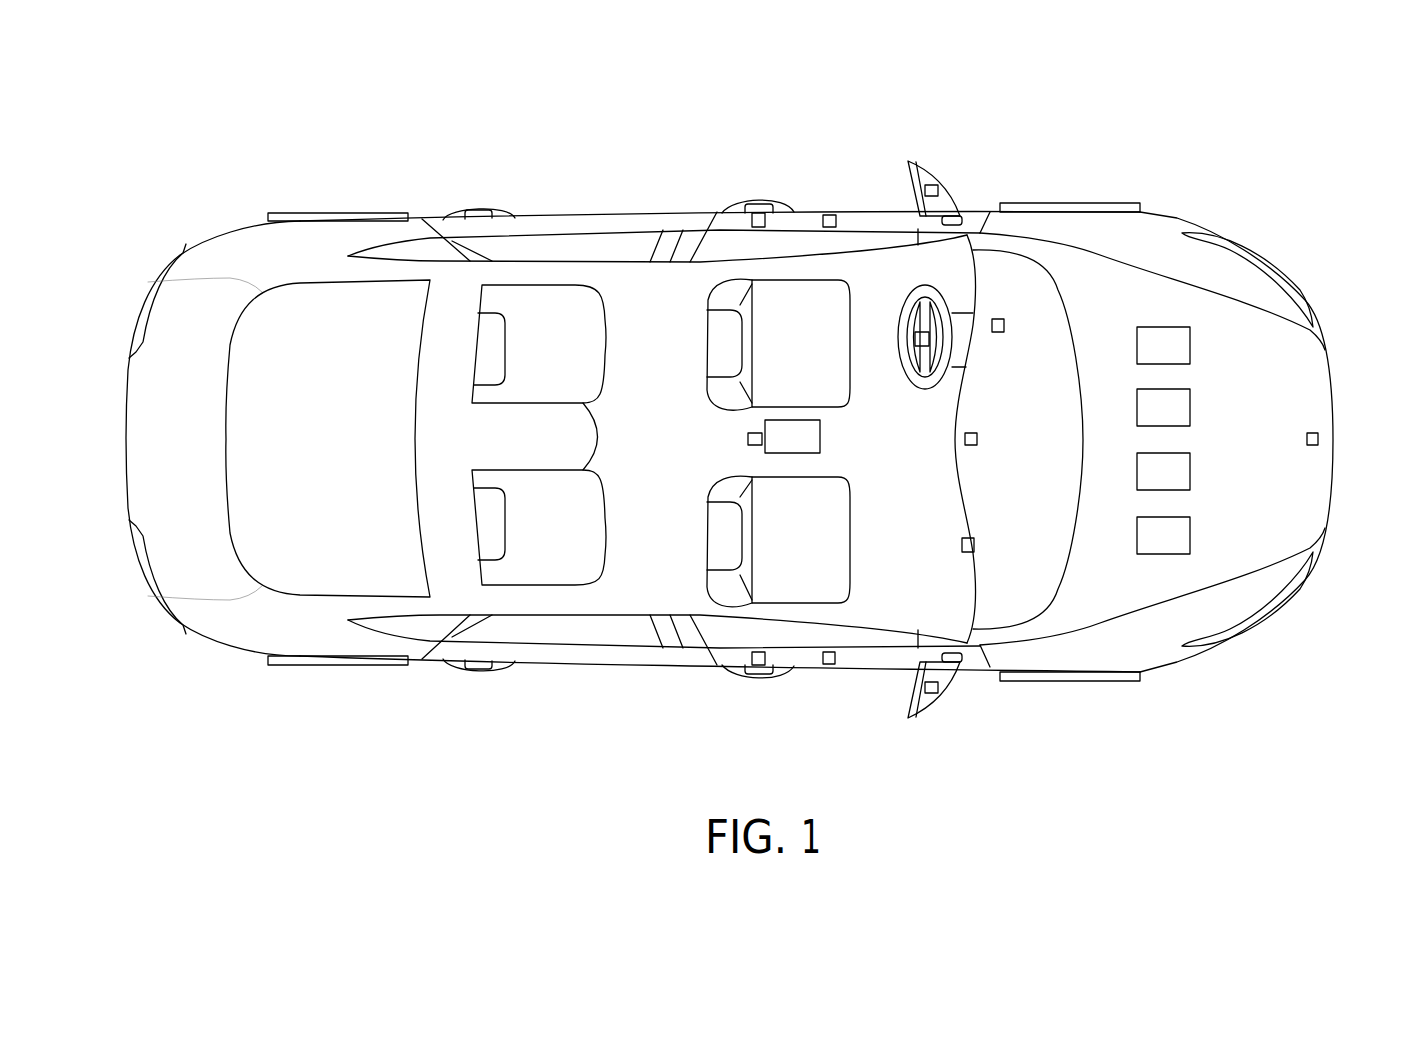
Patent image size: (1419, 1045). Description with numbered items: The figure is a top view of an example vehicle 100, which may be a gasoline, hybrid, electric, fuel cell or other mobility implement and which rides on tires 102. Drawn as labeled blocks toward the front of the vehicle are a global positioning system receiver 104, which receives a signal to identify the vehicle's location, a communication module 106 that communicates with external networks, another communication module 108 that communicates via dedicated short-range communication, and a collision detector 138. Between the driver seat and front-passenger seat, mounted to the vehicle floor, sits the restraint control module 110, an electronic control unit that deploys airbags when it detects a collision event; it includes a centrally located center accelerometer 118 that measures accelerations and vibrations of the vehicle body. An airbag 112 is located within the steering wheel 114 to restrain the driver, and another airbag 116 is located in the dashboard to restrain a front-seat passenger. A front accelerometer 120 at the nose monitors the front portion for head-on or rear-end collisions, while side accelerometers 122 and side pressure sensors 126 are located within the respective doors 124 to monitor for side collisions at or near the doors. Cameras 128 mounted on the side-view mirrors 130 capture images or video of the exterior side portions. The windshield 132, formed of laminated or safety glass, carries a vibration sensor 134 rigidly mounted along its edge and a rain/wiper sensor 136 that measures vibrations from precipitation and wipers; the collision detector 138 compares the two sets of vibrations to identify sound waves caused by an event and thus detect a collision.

The vehicle 100 is at (1260, 138).
The tires 102 is at (340, 213).
The global positioning system (GPS) receiver 104 is at (1182, 358).
The communication module 106 is at (1182, 420).
The communication module 108 is at (1182, 484).
The restraint control module 110 is at (810, 444).
The airbag 112 is at (921, 346).
The steering wheel 114 is at (927, 389).
The airbag 116 is at (962, 546).
The center accelerometer 118 is at (748, 440).
The front accelerometer 120 is at (1318, 439).
The side accelerometers 122 is at (758, 213).
The doors 124 is at (712, 213).
The side pressure sensors 126 is at (830, 215).
The cameras 128 is at (934, 185).
The side-view mirrors 130 is at (910, 161).
The windshield 132 is at (1035, 526).
The vibration sensor 134 is at (978, 440).
The rain/wiper sensor 136 is at (1005, 326).
The collision detector 138 is at (1182, 548).